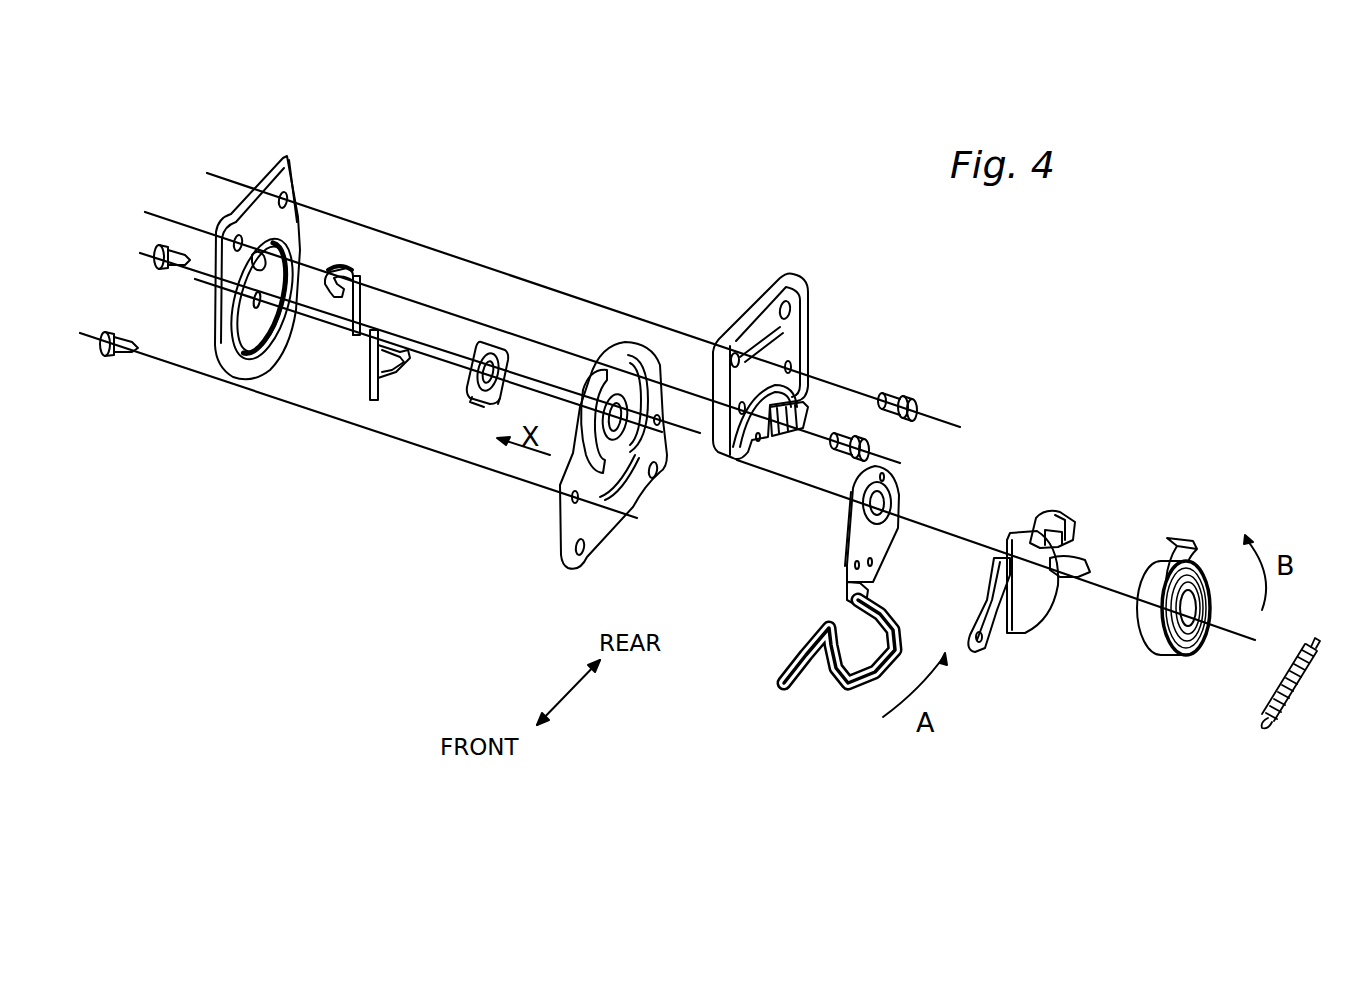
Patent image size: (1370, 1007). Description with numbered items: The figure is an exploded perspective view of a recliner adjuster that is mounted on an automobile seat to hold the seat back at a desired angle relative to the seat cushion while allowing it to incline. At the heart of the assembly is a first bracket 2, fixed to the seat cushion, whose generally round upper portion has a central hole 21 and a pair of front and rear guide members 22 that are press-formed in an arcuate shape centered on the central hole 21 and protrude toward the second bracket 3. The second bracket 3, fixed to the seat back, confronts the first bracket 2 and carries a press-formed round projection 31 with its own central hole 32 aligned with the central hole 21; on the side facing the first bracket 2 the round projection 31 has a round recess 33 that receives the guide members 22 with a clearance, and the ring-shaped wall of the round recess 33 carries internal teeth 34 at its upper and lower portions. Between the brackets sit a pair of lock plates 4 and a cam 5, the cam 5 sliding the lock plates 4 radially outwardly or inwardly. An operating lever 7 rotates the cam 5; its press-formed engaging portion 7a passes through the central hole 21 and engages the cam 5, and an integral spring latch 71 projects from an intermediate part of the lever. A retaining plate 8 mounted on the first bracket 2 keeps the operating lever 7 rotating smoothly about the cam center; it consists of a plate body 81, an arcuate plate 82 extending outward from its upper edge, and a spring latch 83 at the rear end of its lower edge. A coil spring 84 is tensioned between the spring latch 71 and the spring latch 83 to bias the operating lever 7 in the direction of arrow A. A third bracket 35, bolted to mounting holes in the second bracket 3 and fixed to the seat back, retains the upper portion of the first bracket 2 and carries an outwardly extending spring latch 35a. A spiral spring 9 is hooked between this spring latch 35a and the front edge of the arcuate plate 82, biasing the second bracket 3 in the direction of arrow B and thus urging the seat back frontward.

The first bracket 2 is at (580, 520).
The central hole 21 is at (620, 393).
The guide members 22 is at (587, 433).
The second bracket 3 is at (253, 383).
The round projection 31 is at (245, 333).
The central hole 32 is at (253, 302).
The round recess 33 is at (260, 255).
The internal teeth 34 is at (270, 347).
The third bracket 35 is at (803, 277).
The spring latch 35a is at (790, 437).
The lock plates 4 is at (378, 398).
The cam 5 is at (477, 403).
The operating lever 7 is at (877, 606).
The engaging portion 7a is at (887, 503).
The spring latch 71 is at (850, 595).
The retaining plate 8 is at (1052, 604).
The plate body 81 is at (1030, 597).
The arcuate plate 82 is at (1030, 543).
The spring latch 83 is at (1087, 570).
The coil spring 84 is at (1292, 703).
The spiral spring 9 is at (1170, 655).